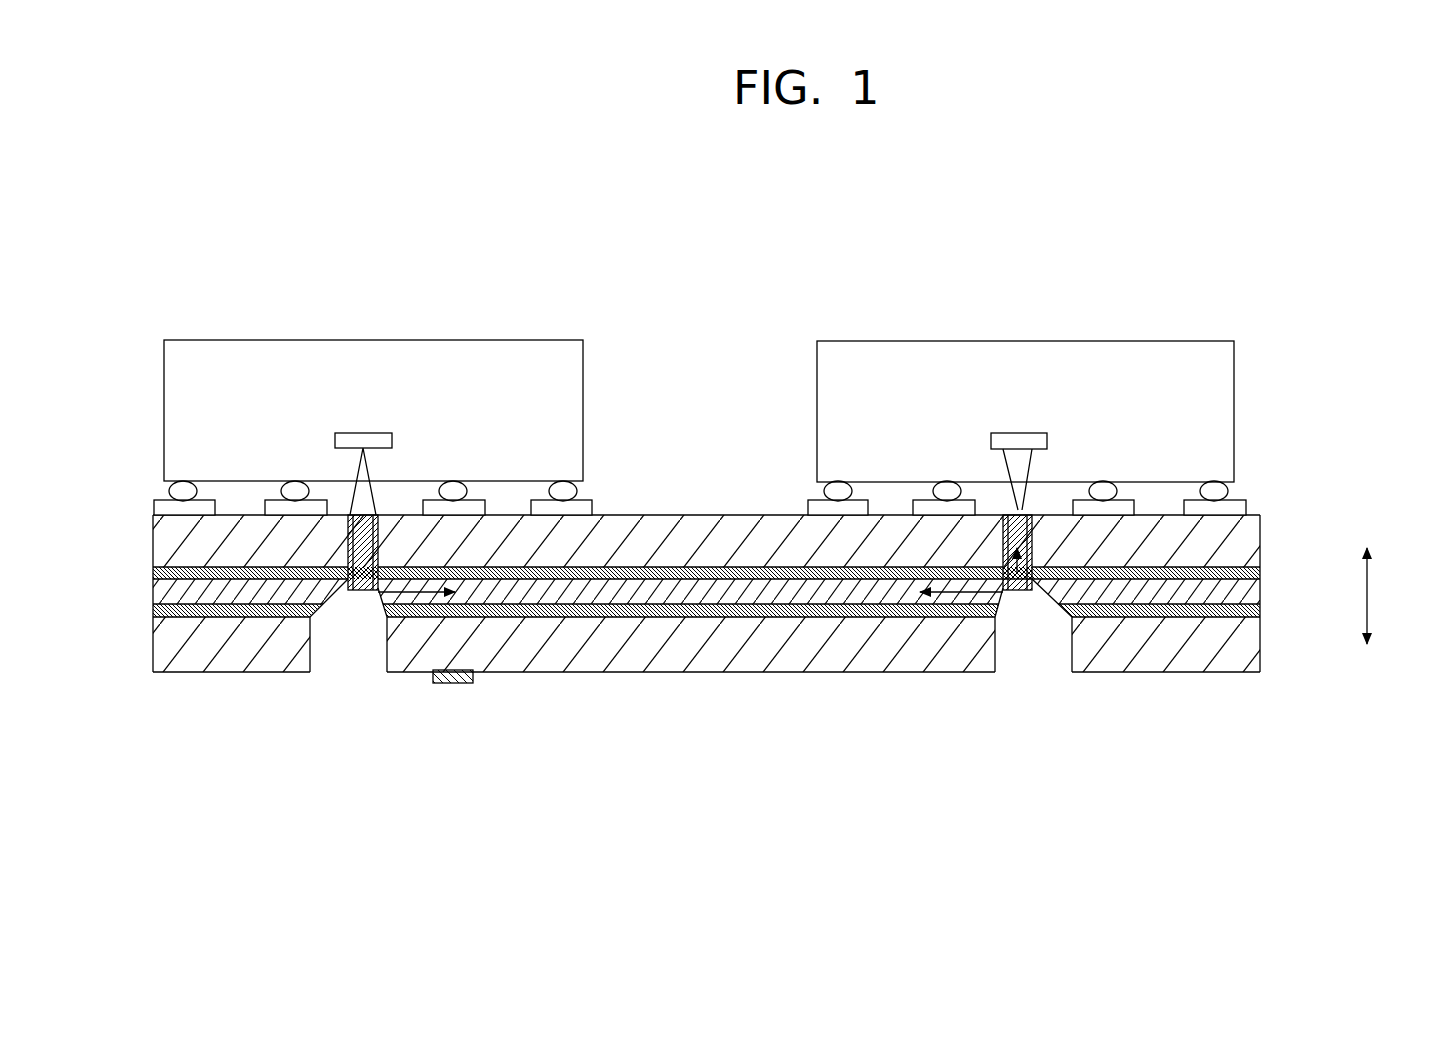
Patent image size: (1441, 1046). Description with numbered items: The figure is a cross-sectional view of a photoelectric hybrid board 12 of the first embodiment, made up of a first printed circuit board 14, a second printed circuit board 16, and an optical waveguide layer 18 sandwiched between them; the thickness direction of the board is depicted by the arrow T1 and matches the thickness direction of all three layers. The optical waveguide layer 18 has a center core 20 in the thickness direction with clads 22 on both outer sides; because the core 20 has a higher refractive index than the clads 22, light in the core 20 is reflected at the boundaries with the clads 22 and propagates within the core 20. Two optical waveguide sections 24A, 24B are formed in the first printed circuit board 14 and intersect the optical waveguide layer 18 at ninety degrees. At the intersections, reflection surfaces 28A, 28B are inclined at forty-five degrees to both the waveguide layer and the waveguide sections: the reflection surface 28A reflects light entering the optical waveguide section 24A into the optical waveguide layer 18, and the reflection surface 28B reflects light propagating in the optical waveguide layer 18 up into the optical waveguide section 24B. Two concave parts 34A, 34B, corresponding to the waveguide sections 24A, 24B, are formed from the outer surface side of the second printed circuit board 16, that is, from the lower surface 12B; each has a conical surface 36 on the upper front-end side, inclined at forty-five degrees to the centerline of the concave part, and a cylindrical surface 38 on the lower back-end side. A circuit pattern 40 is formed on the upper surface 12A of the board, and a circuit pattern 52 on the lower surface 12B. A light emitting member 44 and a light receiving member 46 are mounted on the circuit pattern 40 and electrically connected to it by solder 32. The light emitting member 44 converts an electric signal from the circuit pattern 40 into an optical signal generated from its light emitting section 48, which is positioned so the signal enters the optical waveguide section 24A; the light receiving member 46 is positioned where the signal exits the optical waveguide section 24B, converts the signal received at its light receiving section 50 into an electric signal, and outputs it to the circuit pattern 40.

The photoelectric hybrid board 12 is at (1282, 730).
The upper surface 12A is at (720, 513).
The lower surface 12B is at (680, 673).
The first printed circuit board 14 is at (1262, 540).
The second printed circuit board 16 is at (1262, 642).
The optical waveguide layer 18 is at (1262, 595).
The core 20 is at (153, 594).
The clads 22 is at (153, 573).
The optical waveguide section 24A is at (362, 513).
The optical waveguide section 24B is at (1028, 513).
The reflection surface 28A is at (366, 640).
The reflection surface 28B is at (1018, 640).
The solder 32 is at (186, 480).
The concave part 34A is at (348, 668).
The concave part 34B is at (1037, 668).
The conical surface 36 is at (332, 640).
The cylindrical surface 38 is at (318, 665).
The circuit pattern 40 is at (160, 500).
The light emitting member 44 is at (456, 337).
The light receiving member 46 is at (1150, 338).
The light emitting section 48 is at (363, 432).
The light receiving section 50 is at (1020, 432).
The circuit pattern 52 is at (458, 684).
The thickness direction T1 is at (1370, 592).